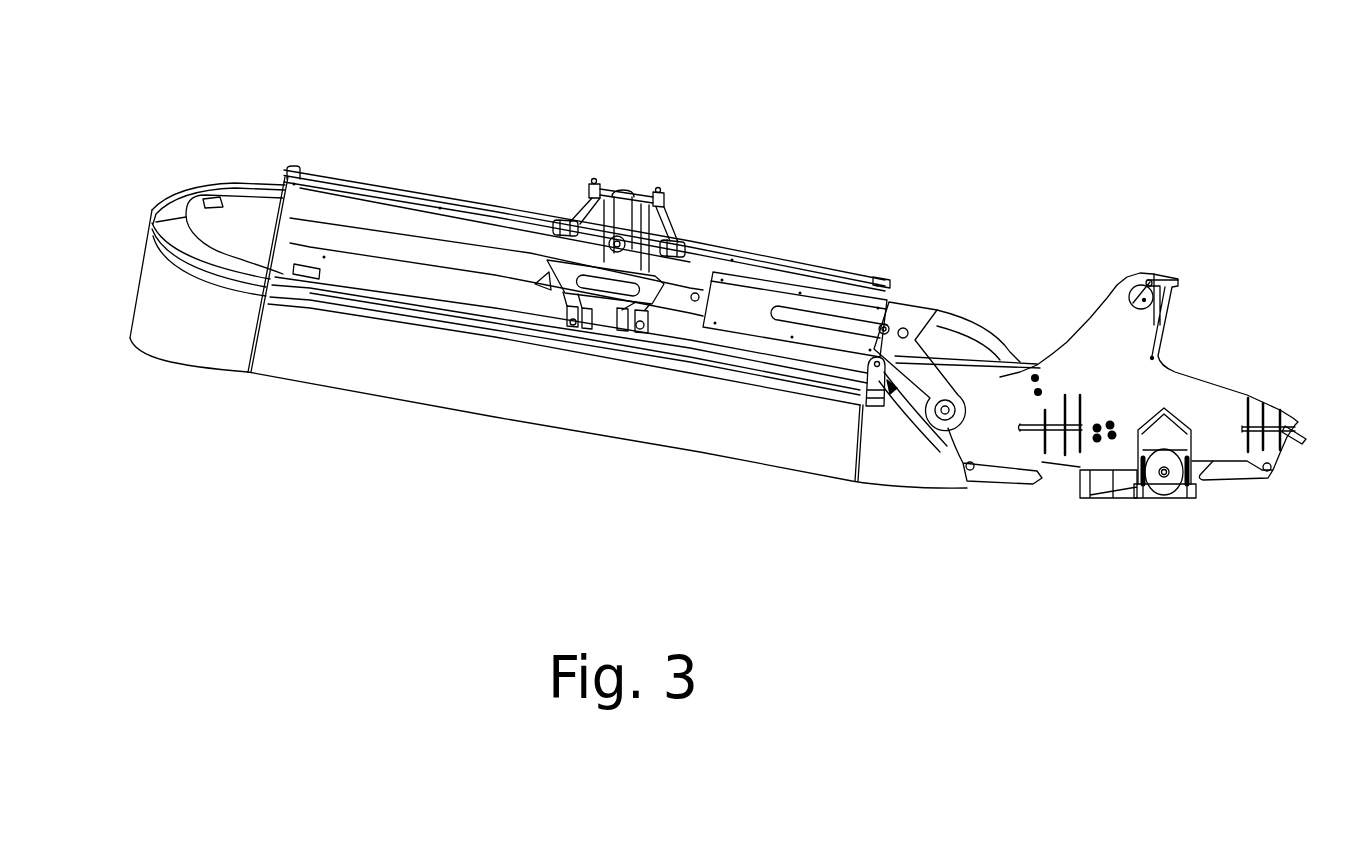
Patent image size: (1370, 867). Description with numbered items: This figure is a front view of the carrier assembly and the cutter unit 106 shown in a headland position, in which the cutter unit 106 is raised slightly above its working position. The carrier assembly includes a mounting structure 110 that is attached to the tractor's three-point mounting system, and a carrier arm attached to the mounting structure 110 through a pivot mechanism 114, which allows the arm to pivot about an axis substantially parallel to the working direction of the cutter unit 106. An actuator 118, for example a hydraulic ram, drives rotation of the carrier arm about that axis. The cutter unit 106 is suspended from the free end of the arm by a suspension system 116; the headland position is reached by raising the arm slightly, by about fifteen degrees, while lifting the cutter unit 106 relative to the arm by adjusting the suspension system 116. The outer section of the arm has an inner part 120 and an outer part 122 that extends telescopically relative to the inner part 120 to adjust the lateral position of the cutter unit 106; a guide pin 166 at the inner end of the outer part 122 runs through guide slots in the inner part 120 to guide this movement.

The cutter unit 106 is at (233, 132).
The mounting structure 110 is at (1198, 390).
The pivot mechanism 114 is at (945, 412).
The suspension system 116 is at (675, 183).
The actuator 118 is at (1023, 363).
The inner part 120 is at (830, 296).
The outer part 122 is at (690, 281).
The guide pin 166 is at (886, 326).